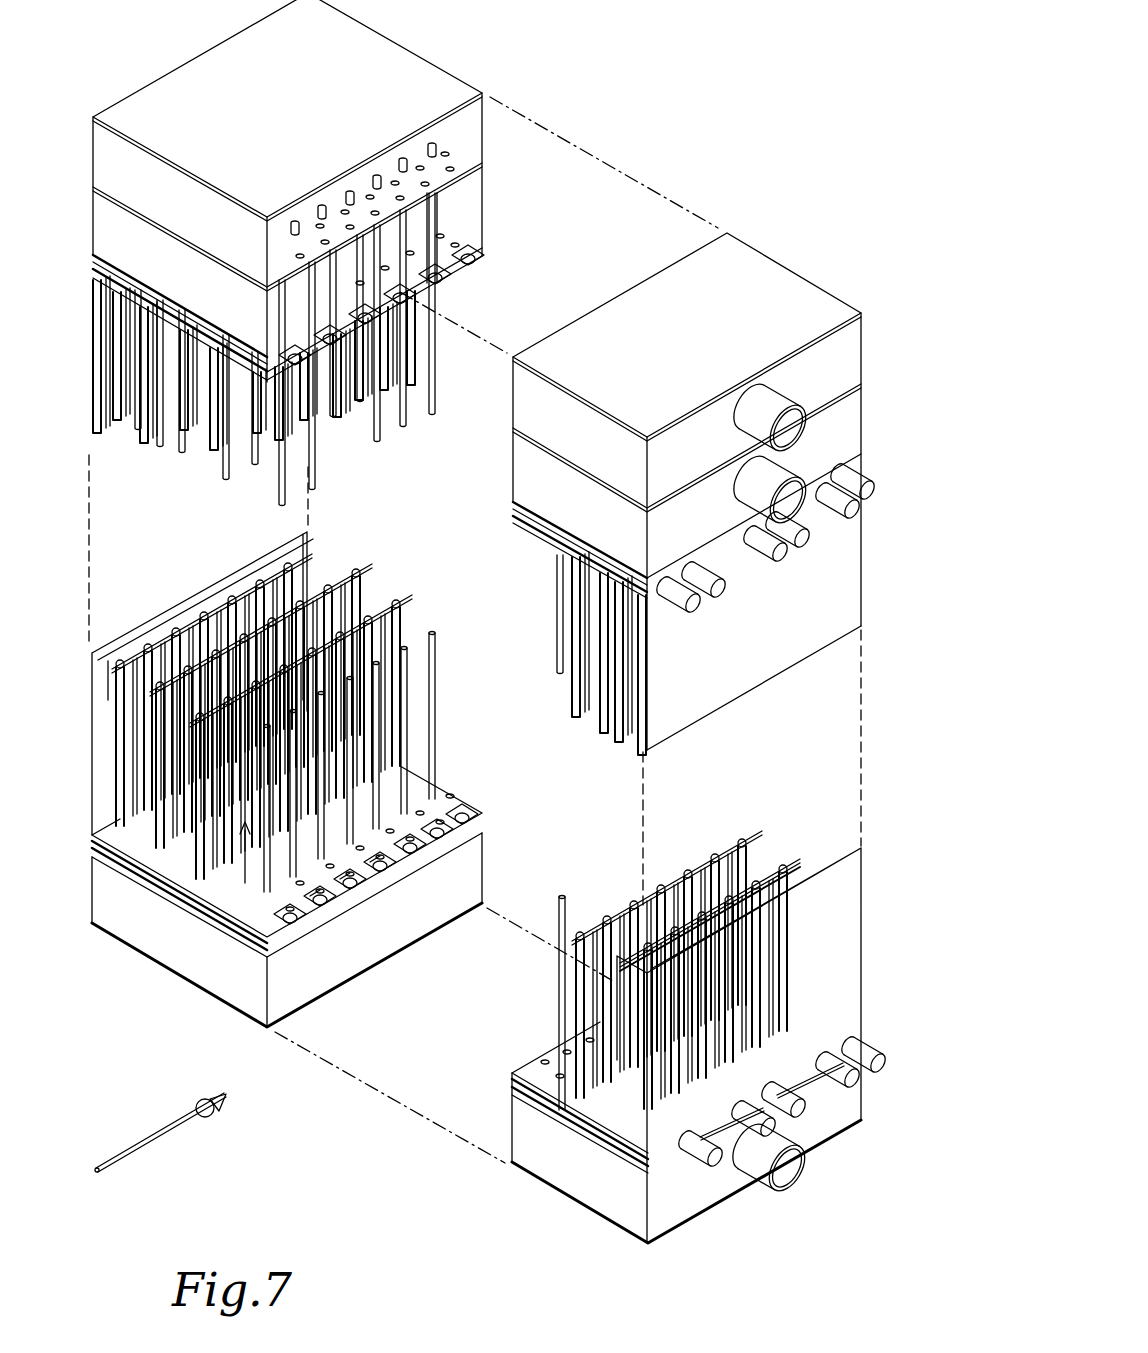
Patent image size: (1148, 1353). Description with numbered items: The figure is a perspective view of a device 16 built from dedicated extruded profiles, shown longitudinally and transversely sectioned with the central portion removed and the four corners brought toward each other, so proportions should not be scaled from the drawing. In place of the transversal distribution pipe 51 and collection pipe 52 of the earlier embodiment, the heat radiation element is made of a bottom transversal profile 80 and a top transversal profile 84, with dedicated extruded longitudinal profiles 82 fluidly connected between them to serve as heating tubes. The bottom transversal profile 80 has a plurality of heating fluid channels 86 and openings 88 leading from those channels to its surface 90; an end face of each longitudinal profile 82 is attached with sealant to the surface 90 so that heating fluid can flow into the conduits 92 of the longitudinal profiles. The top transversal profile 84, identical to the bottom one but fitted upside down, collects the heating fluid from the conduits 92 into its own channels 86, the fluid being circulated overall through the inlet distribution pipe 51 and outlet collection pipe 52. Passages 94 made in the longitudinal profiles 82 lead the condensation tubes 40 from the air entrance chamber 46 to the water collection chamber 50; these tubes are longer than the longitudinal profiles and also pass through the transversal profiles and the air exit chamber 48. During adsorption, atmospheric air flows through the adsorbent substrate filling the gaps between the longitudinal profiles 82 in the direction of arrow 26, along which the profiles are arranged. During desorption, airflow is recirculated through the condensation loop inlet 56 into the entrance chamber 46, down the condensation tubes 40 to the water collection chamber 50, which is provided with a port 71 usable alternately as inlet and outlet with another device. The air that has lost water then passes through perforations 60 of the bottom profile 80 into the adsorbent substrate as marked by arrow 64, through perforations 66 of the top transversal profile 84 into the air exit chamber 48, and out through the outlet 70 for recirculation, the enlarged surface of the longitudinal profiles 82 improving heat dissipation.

The device 16 is at (692, 82).
The arrow 26 is at (158, 1130).
The condensation tubes 40 is at (430, 337).
The air entrance chamber 46 is at (467, 140).
The air exit chamber 48 is at (467, 200).
The water collection chamber 50 is at (352, 963).
The distribution pipe 51 is at (880, 487).
The collection pipe 52 is at (863, 512).
The inlet 56 is at (788, 430).
The perforations 60 is at (262, 897).
The arrow 64 is at (180, 912).
The perforations 66 is at (442, 235).
The outlet 70 is at (788, 492).
The port 71 is at (787, 1165).
The bottom transversal profile 80 is at (471, 813).
The longitudinal profiles 82 is at (210, 478).
The top transversal profile 84 is at (482, 245).
The heating fluid channels 86 is at (450, 277).
The openings 88 is at (462, 804).
The surface 90 is at (436, 783).
The conduits 92 is at (340, 583).
The passages 94 is at (760, 830).